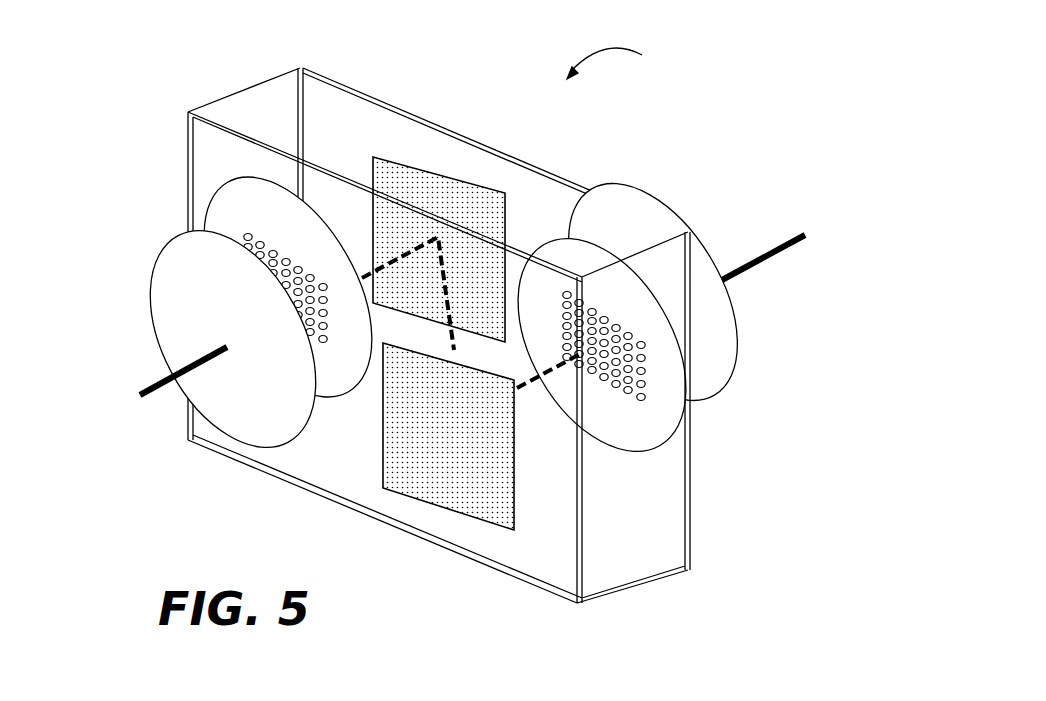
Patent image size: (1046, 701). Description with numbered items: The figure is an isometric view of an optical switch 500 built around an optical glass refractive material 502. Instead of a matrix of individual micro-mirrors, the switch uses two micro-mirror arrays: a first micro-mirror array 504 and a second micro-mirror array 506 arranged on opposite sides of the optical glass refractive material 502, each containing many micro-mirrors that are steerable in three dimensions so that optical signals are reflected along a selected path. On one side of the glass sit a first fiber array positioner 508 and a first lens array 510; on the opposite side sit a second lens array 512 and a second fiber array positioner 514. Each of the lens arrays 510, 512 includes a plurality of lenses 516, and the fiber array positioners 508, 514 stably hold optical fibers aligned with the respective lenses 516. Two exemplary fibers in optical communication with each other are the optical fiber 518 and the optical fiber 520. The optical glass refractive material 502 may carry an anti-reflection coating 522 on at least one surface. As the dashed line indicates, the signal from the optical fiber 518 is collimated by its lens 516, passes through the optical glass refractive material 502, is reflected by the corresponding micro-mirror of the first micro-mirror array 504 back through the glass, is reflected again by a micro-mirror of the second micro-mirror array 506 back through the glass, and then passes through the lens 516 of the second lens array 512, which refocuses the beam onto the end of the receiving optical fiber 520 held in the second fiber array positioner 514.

The optical switch 500 is at (627, 66).
The optical glass refractive material 502 is at (681, 572).
The first micro-mirror array 504 is at (442, 172).
The second micro-mirror array 506 is at (423, 502).
The first fiber array positioner 508 is at (178, 293).
The first lens array 510 is at (230, 202).
The second lens array 512 is at (650, 428).
The second fiber array positioner 514 is at (710, 317).
The lenses 516 is at (243, 234).
The optical fiber 518 is at (155, 377).
The optical fiber 520 is at (776, 257).
The anti-reflection coating 522 is at (692, 538).